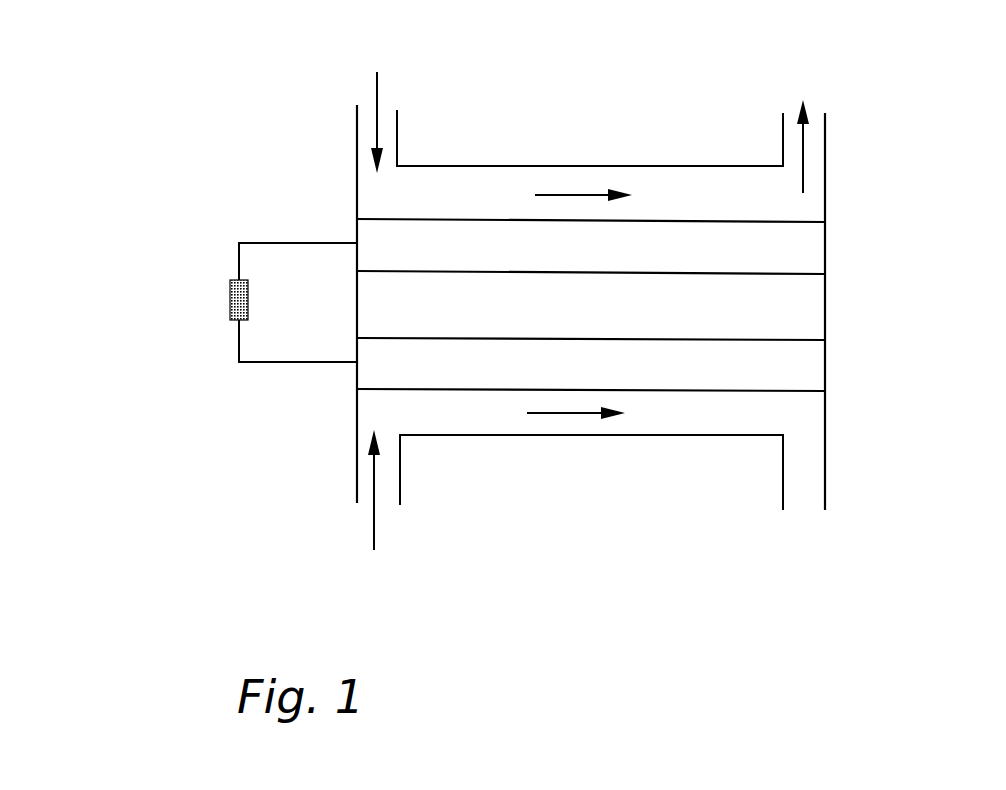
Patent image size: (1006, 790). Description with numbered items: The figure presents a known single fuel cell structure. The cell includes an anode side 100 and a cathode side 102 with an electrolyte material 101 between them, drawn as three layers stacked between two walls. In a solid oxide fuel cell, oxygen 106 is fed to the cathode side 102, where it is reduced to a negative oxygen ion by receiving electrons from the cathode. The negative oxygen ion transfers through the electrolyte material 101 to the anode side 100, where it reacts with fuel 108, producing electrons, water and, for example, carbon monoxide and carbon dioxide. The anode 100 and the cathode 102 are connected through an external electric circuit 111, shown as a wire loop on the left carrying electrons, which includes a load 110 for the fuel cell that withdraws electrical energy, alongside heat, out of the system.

The anode side 100 is at (795, 243).
The electrolyte material 101 is at (798, 304).
The cathode side 102 is at (788, 362).
The oxygen 106 is at (374, 535).
The fuel 108 is at (375, 95).
The load 110 is at (230, 303).
The external electric circuit 111 is at (218, 230).